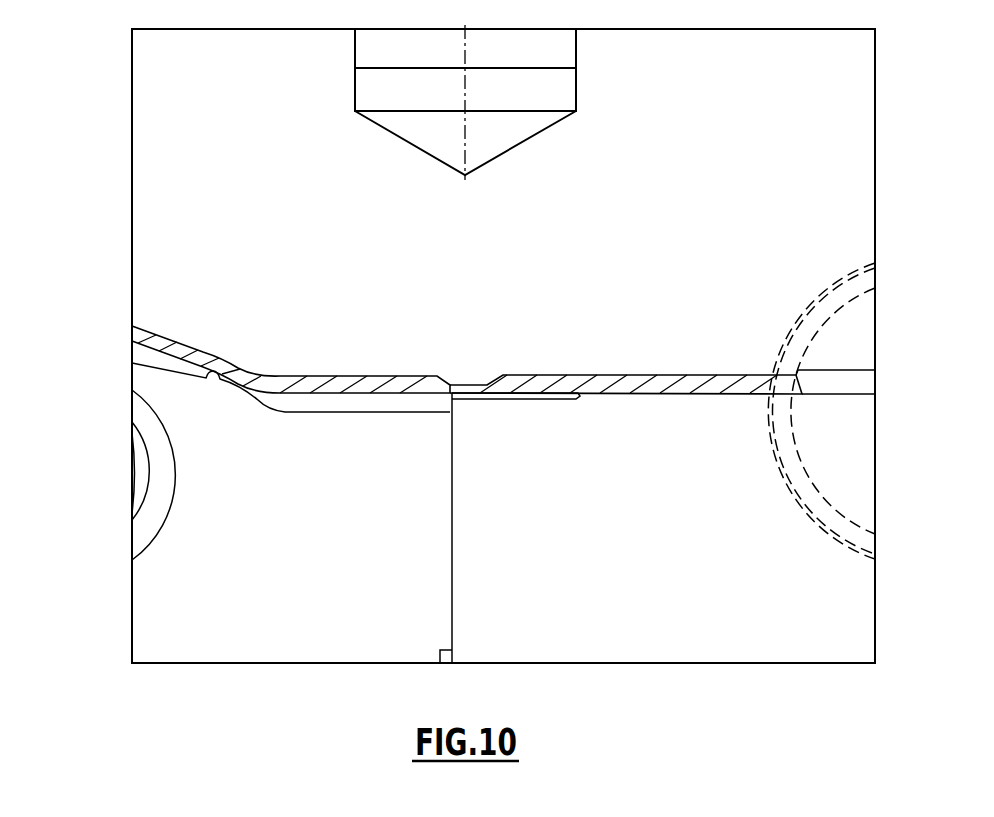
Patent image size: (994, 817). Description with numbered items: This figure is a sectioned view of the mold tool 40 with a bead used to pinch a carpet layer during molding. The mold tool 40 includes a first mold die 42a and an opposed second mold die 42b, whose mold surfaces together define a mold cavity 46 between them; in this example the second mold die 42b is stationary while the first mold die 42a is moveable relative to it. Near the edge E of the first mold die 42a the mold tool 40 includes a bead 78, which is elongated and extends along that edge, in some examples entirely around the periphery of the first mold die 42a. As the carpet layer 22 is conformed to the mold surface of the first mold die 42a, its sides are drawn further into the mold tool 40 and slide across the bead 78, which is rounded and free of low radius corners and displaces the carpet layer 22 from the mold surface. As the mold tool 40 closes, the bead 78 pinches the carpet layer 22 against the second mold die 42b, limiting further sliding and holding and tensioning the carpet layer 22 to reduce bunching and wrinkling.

The mold tool 40 is at (100, 620).
The first mold die 42a is at (837, 190).
The second mold die 42b is at (837, 612).
The carpet layer 22 is at (168, 333).
The mold cavity 46 is at (279, 406).
The bead 78 is at (463, 405).
The edge E is at (792, 331).